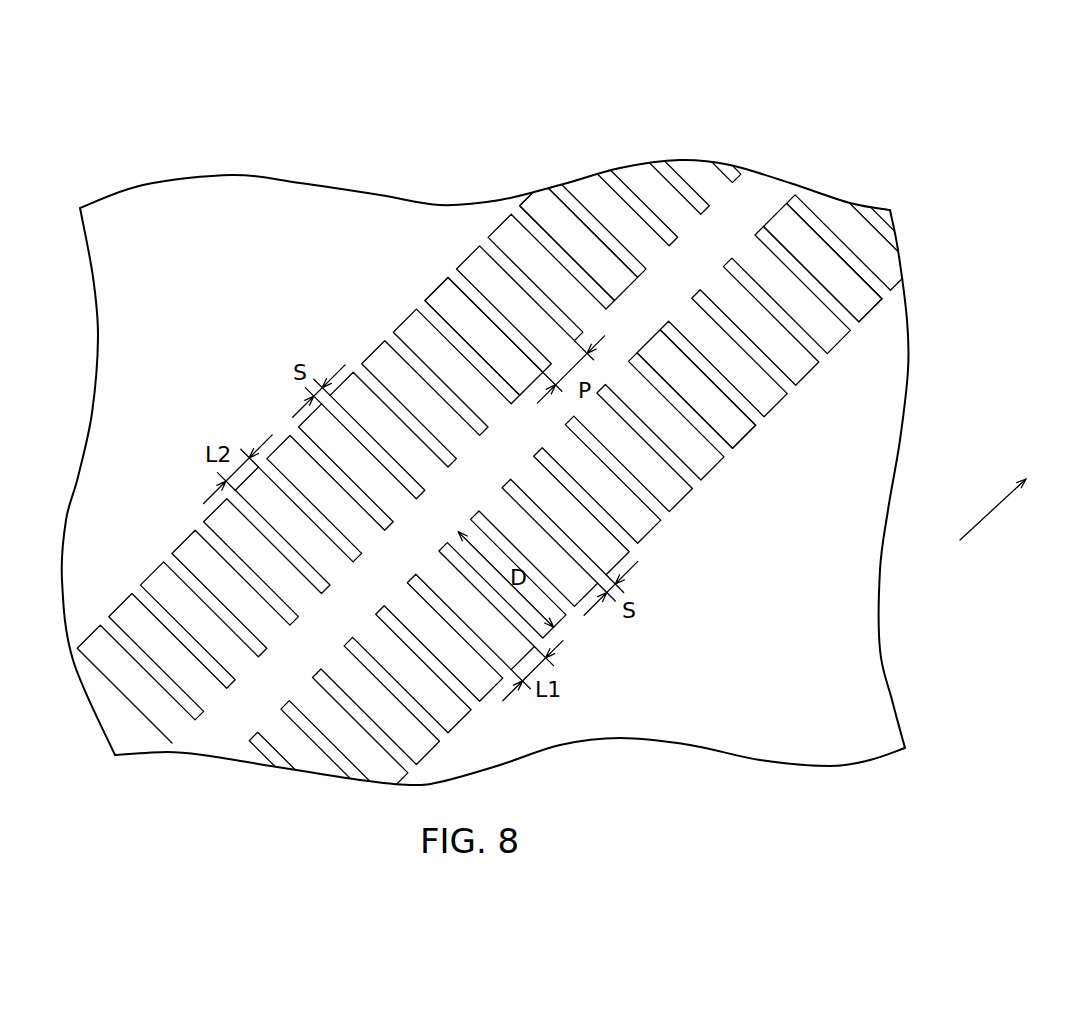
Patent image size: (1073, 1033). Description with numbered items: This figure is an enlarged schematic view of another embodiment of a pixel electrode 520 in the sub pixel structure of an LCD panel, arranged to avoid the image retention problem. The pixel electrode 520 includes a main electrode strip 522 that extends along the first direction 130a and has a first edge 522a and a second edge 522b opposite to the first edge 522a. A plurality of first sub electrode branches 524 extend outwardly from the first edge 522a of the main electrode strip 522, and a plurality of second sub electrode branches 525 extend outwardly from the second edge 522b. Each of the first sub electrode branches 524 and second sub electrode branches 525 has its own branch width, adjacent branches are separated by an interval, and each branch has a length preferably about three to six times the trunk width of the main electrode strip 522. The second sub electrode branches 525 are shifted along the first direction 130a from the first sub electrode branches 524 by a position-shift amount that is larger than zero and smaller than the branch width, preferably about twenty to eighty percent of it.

The pixel electrode 520 is at (913, 125).
The main electrode strip 522 is at (758, 196).
The first edge 522a is at (291, 701).
The second edge 522b is at (229, 684).
The first sub electrode branches 524 is at (856, 298).
The second sub electrode branches 525 is at (530, 204).
The first direction 130a is at (1012, 496).